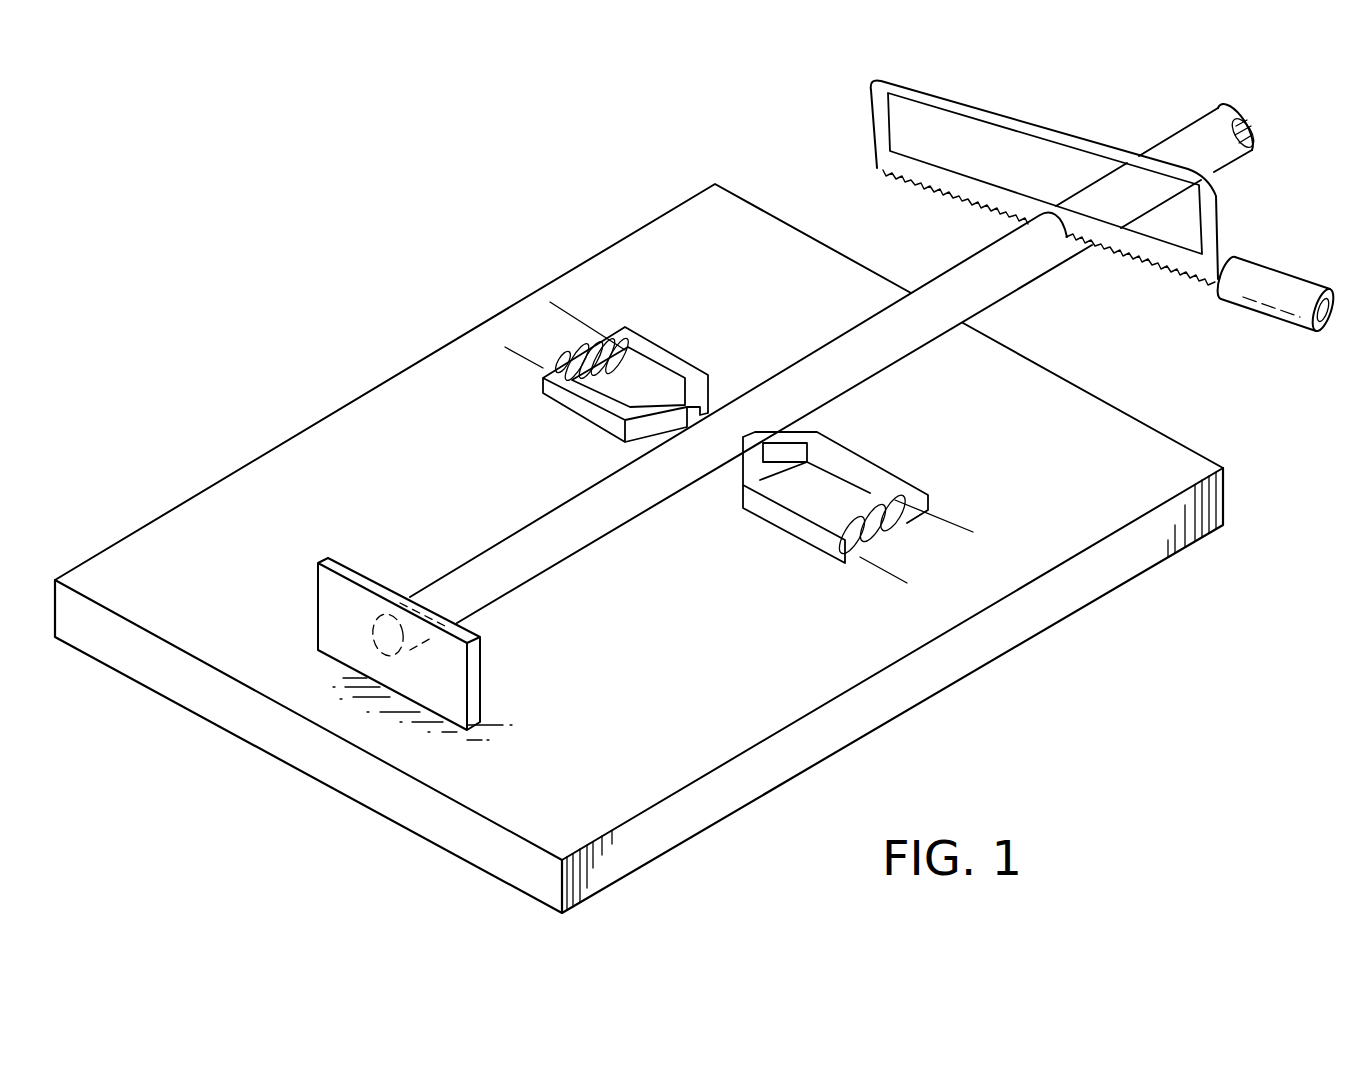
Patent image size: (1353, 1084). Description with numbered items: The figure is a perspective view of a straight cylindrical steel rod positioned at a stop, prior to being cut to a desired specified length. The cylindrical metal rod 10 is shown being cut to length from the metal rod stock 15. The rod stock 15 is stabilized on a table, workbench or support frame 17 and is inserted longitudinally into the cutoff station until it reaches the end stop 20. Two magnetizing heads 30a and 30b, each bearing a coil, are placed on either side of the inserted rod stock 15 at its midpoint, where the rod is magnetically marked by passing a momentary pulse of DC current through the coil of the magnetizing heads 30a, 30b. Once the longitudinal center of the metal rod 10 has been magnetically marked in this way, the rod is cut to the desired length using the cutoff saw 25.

The cylindrical metal rod 10 is at (553, 510).
The metal rod stock 15 is at (1210, 145).
The support frame 17 is at (669, 688).
The end stop 20 is at (350, 567).
The cutoff saw 25 is at (1113, 253).
The magnetizing head 30a is at (680, 353).
The magnetizing head 30b is at (877, 462).